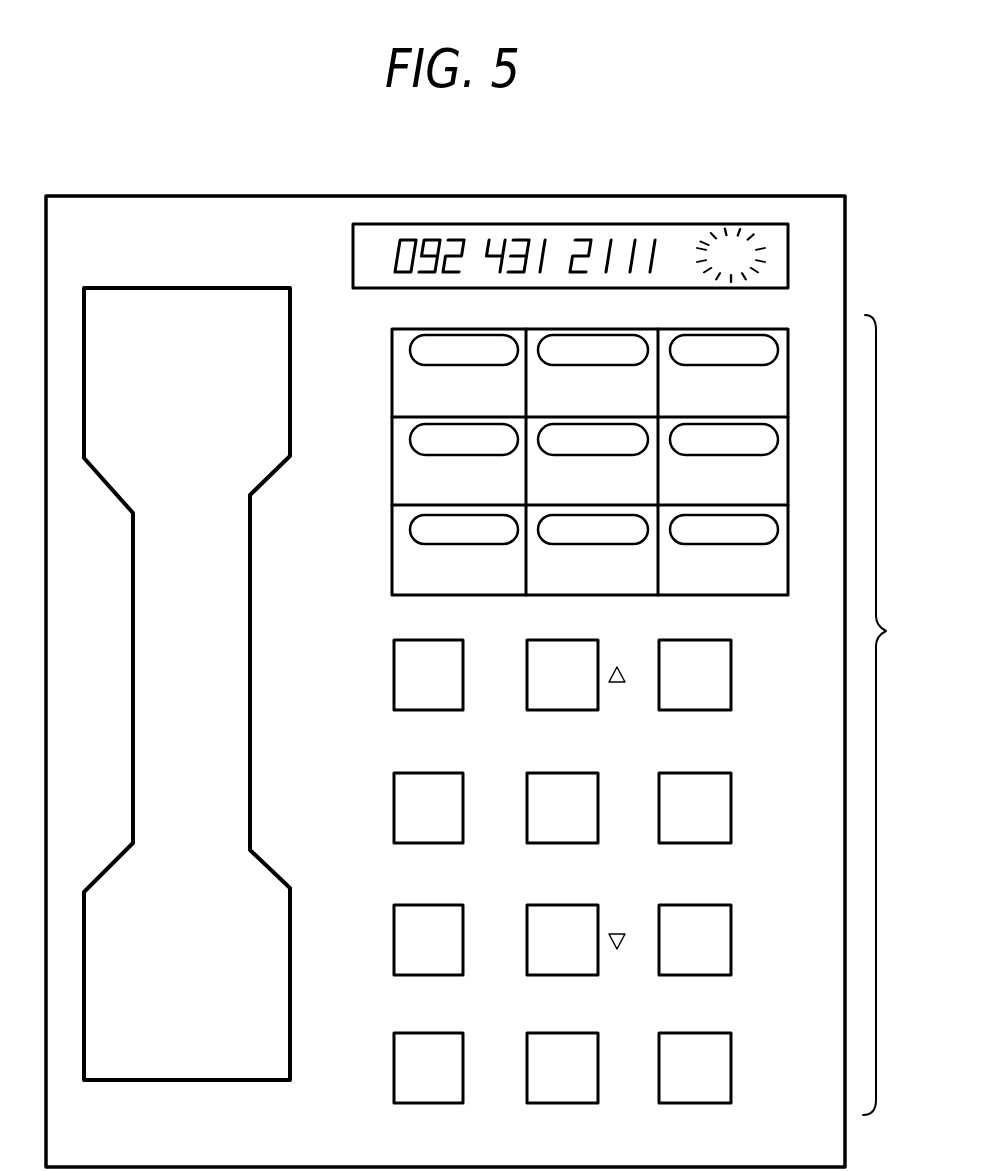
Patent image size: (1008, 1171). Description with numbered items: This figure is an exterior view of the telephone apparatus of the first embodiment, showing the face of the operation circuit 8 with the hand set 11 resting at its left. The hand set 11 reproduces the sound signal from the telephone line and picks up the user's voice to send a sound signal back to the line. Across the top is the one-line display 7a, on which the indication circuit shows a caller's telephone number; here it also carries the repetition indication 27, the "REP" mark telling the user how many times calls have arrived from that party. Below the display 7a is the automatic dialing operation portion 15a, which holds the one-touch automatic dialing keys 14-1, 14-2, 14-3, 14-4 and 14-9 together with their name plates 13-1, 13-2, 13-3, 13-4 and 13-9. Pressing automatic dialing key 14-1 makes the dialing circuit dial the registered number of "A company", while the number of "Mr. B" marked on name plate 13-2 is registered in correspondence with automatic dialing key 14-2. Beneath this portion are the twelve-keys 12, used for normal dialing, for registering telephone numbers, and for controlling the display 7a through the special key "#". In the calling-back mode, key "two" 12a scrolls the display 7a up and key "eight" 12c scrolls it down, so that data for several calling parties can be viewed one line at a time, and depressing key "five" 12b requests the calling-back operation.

The operation circuit 8 is at (476, 681).
The hand set 11 is at (235, 300).
The display 7a is at (687, 223).
The repeat indicator 27 is at (770, 253).
The automatic dialing operation portion 15a is at (376, 339).
The name display area 13-1 is at (394, 340).
The name plate 13-2 is at (536, 342).
The name display area 13-3 is at (667, 342).
The name display area 13-4 is at (397, 478).
The name display area 13-9 is at (727, 578).
The automatic dialing key 14-1 is at (487, 345).
The automatic dialing key 14-2 is at (628, 344).
The automatic dialing key 14-3 is at (762, 344).
The automatic dialing key 14-4 is at (412, 437).
The automatic dialing key 14-9 is at (757, 533).
The twelve-keys 12 is at (591, 851).
The up key 12a is at (598, 640).
The key "5" 12b is at (598, 773).
The down key 12c is at (598, 906).